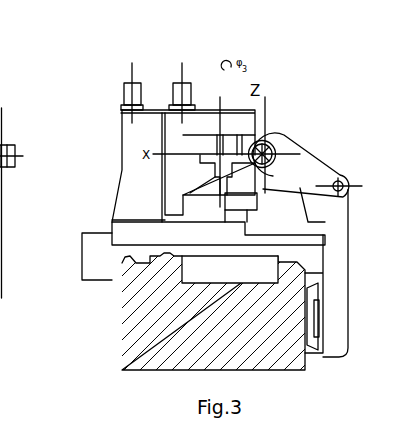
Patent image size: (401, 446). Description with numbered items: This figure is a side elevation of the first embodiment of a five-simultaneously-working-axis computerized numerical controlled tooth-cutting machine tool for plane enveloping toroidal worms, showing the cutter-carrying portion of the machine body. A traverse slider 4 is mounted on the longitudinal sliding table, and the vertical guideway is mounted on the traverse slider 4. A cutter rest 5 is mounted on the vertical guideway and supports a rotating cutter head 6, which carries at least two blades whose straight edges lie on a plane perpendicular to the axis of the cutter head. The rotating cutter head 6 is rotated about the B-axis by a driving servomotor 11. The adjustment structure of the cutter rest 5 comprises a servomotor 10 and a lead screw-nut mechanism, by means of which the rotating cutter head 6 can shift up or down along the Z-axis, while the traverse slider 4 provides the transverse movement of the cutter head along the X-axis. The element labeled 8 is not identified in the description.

The traverse slider 4 is at (147, 224).
The cutter rest 5 is at (175, 132).
The rotating cutter head 6 is at (236, 156).
The guide rod 8 is at (219, 144).
The servomotor 10 is at (122, 170).
The driving servomotor 11 is at (185, 92).